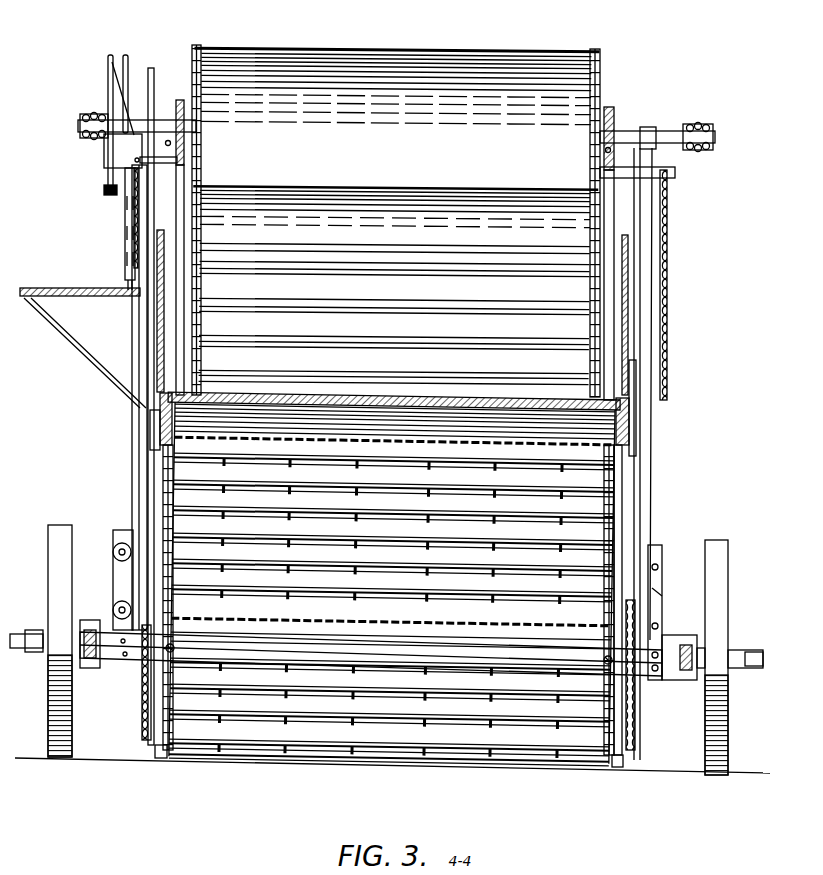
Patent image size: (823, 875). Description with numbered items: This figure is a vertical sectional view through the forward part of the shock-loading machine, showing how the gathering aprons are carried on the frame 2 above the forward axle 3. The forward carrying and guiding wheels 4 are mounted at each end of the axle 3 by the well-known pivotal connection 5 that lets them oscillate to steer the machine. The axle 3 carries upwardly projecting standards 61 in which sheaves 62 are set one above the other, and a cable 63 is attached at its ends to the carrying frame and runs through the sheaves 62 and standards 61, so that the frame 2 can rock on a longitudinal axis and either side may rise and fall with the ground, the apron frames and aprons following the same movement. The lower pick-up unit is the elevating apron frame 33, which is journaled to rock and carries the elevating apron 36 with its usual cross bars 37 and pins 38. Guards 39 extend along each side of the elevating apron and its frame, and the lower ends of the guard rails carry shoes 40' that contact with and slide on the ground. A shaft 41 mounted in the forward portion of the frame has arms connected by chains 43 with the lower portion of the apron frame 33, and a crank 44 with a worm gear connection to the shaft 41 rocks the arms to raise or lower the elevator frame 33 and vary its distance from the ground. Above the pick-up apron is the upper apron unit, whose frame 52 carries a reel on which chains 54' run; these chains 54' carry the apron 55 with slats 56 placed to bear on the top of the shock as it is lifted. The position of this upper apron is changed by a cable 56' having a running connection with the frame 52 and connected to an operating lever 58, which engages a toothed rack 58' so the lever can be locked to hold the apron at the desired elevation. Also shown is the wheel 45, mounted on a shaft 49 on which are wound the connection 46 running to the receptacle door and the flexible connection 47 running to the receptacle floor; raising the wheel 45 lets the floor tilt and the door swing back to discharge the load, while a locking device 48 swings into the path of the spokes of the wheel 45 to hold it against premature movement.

The frame 2 is at (132, 421).
The forward axle 3 is at (371, 654).
The forward carrying and guiding wheels 4 is at (48, 724).
The pivotal connection 5 is at (93, 662).
The elevating apron frame 33 is at (160, 425).
The elevating apron 36 is at (393, 440).
The cross bars 37 is at (410, 535).
The pins 38 is at (420, 572).
The guards 39 is at (176, 342).
The shoes 40' is at (390, 626).
The shaft 41 is at (104, 160).
The chains 43 is at (146, 703).
The crank 44 is at (108, 93).
The wheel 45 is at (128, 90).
The connection 46 is at (85, 134).
The flexible connection 47 is at (180, 143).
The locking device 48 is at (154, 85).
The shaft 49 is at (636, 127).
The frame 52 is at (181, 185).
The chains 54' is at (409, 207).
The apron 55 is at (283, 50).
The slats 56 is at (205, 338).
The cable 56' is at (388, 312).
The operating lever 58 is at (90, 224).
The toothed rack 58' is at (95, 259).
The standards 61 is at (120, 530).
The sheaves 62 is at (118, 552).
The cable 63 is at (662, 596).